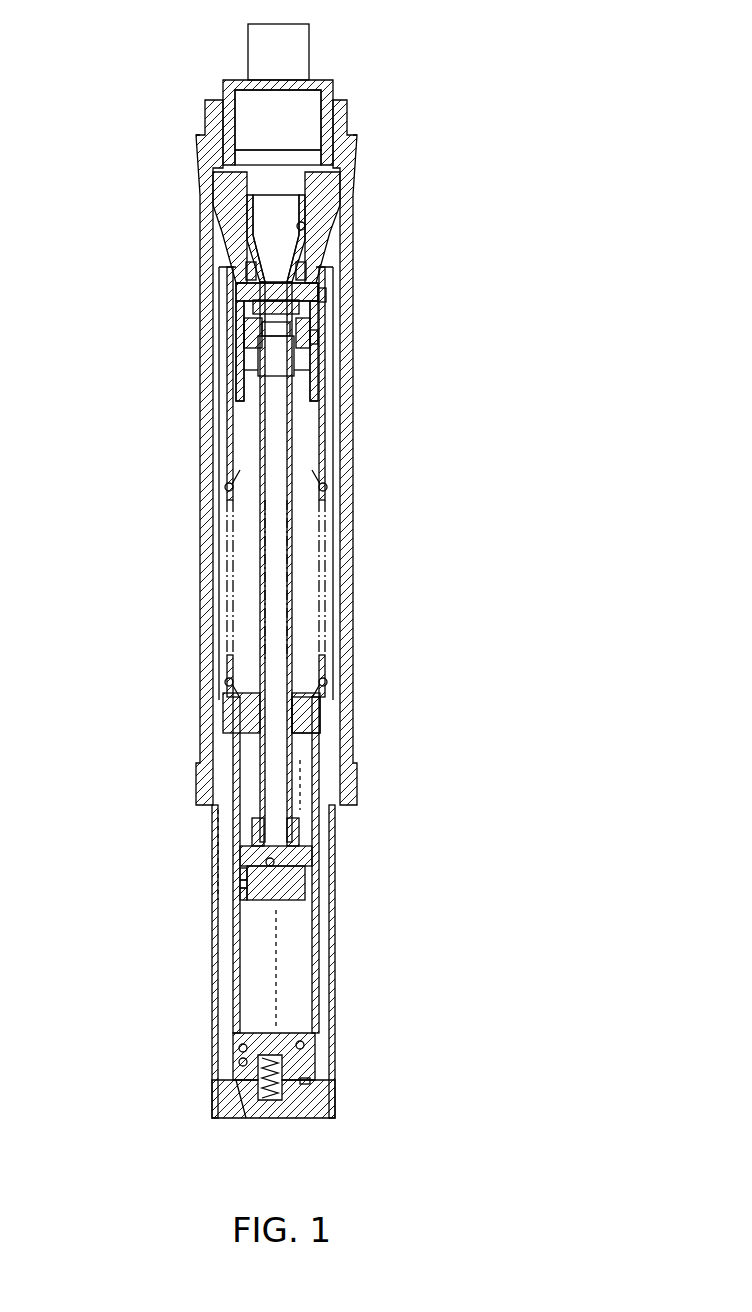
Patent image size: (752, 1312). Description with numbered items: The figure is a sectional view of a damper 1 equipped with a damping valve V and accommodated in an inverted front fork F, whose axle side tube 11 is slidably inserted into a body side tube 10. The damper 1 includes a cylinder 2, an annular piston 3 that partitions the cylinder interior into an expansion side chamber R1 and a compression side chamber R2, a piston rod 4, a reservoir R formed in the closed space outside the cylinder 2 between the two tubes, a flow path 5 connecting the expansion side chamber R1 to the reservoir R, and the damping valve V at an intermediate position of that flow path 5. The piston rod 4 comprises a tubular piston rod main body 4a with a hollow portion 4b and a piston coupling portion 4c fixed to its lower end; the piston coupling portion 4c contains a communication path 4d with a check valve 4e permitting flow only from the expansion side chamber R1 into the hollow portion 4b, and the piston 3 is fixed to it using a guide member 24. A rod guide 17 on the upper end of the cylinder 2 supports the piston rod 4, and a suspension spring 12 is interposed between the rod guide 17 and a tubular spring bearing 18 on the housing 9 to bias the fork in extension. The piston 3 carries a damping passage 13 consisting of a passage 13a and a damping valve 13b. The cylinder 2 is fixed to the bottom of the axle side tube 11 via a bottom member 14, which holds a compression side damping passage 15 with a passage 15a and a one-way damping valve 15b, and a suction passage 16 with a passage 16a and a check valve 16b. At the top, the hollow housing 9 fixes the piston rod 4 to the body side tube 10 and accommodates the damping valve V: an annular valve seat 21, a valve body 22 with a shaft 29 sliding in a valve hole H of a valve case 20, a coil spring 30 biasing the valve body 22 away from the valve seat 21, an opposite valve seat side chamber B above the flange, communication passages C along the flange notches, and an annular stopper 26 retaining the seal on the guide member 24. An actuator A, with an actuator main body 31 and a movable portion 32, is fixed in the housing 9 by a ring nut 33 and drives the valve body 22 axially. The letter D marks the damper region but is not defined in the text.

The actuator A is at (313, 78).
The ring nut 33 is at (333, 87).
The actuator main body 31 is at (298, 120).
The front fork F is at (400, 168).
The body side tube 10 is at (205, 192).
The housing 9 is at (234, 213).
The movable portion 32 is at (255, 243).
The guide member 24 is at (305, 225).
The valve case 20 is at (310, 262).
The stopper 26 is at (302, 280).
The shaft 29 is at (262, 295).
The damping valve V is at (328, 295).
The valve hole H is at (245, 318).
The opposite valve seat side chamber B is at (305, 318).
The communication passages C is at (262, 328).
The valve body 22 is at (318, 338).
The coil spring 30 is at (245, 345).
The valve seat 21 is at (312, 370).
The spring bearing 18 is at (335, 408).
The damper 1 is at (327, 419).
The suspension spring 12 is at (226, 487).
The piston rod 4 is at (293, 500).
The flow path 5 is at (293, 578).
The piston rod main body 4a is at (292, 532).
The hollow portion 4b is at (290, 640).
The rod guide 17 is at (242, 715).
The damper D is at (325, 718).
The cylinder 2 is at (318, 940).
The reservoir R is at (220, 822).
The expansion side chamber R1 is at (322, 818).
The piston coupling portion 4c is at (260, 832).
The communication path 4d is at (300, 835).
The check valve 4e is at (240, 880).
The piston 3 is at (312, 860).
The damping valve 13b is at (247, 882).
The passage 13a is at (247, 900).
The damping passage 13 is at (250, 908).
The axle side tube 11 is at (335, 975).
The compression side chamber R2 is at (260, 990).
The damping valve 15b is at (300, 1045).
The passage 16a is at (243, 1046).
The bottom member 14 is at (315, 1062).
The suction passage 16 is at (243, 1062).
The passage 15a is at (308, 1082).
The check valve 16b is at (240, 1108).
The compression side damping passage 15 is at (305, 1100).